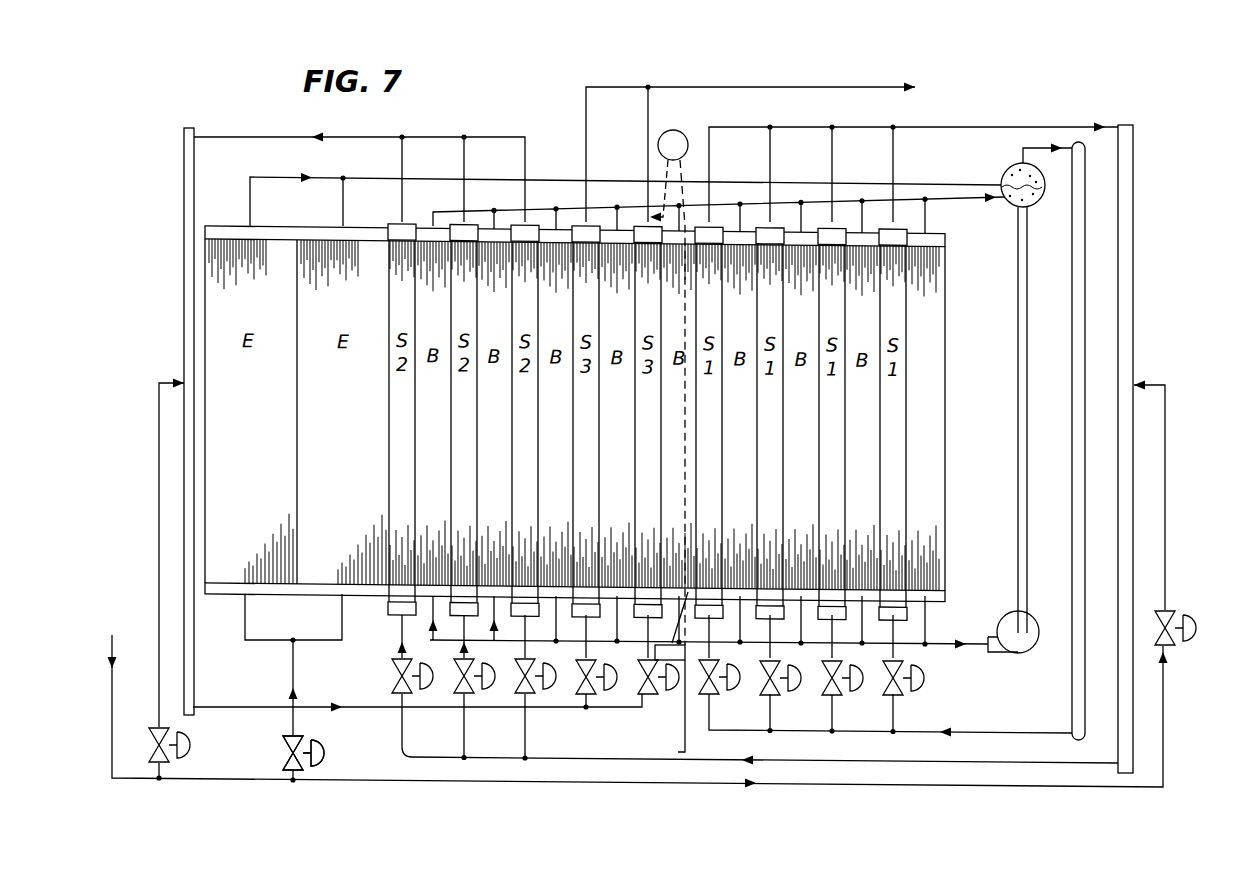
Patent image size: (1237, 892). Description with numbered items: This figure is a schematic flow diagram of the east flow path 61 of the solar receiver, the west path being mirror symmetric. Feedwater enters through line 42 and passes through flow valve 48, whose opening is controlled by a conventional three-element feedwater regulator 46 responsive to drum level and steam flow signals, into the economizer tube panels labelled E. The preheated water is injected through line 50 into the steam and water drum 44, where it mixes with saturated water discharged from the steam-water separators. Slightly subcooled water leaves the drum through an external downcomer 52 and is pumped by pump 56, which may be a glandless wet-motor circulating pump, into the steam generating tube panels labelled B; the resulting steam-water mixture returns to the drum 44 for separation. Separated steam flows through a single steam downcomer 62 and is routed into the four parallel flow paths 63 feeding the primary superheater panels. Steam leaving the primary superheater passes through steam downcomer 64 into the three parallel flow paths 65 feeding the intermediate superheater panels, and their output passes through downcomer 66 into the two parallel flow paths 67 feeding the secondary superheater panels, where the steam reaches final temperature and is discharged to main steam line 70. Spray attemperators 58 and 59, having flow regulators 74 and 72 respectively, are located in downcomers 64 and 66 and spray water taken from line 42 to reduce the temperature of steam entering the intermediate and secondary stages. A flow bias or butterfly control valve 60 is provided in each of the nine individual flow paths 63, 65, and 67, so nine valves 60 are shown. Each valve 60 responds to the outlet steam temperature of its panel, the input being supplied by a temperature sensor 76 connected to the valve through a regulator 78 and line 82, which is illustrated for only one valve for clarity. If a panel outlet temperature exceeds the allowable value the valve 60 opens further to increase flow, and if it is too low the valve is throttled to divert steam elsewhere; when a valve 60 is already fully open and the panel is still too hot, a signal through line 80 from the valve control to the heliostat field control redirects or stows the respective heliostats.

The feedwater line 42 is at (112, 697).
The steam and water drum 44 is at (1010, 170).
The three-element feedwater regulator 46 is at (300, 742).
The flow valve 48 is at (303, 753).
The economizer outlet line 50 is at (566, 182).
The external downcomer 52 is at (1018, 442).
The circulating pump 56 is at (1005, 625).
The spray attemperator 58 is at (1165, 414).
The spray attemperator 59 is at (168, 382).
The flow bias control valve 60 is at (451, 692).
The east flow path 61 is at (726, 86).
The steam downcomer 62 is at (1085, 205).
The parallel flow paths 63 is at (764, 726).
The steam downcomer 64 is at (1133, 166).
The parallel flow paths 65 is at (399, 737).
The steam downcomer 66 is at (184, 211).
The parallel flow paths 67 is at (640, 708).
The main steam line 70 is at (887, 87).
The attemperator flow valve 72 is at (182, 750).
The attemperator flow valve 74 is at (1182, 617).
The temperature sensor 76 is at (689, 145).
The valve regulator 78 is at (688, 592).
The signal line 80 is at (685, 752).
The signal line 82 is at (694, 494).